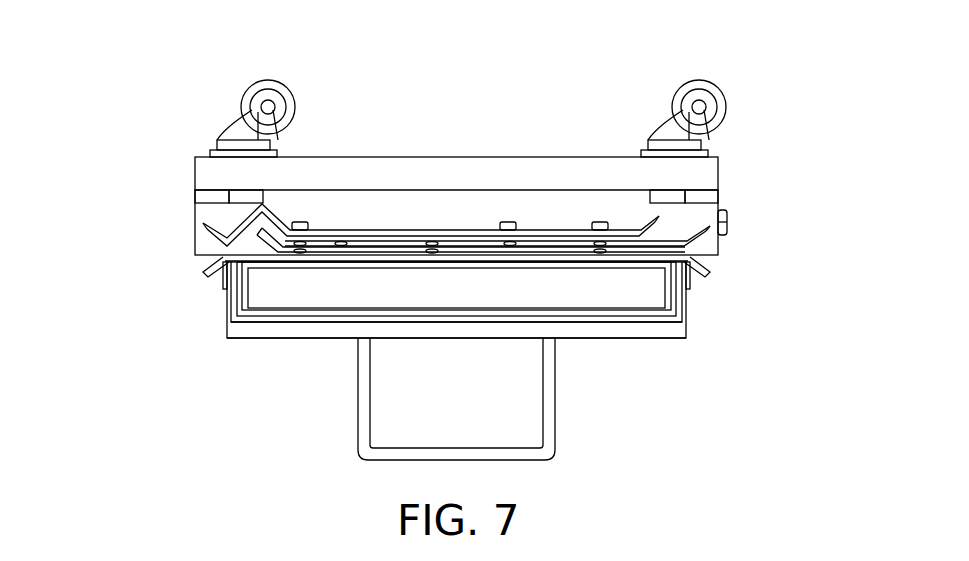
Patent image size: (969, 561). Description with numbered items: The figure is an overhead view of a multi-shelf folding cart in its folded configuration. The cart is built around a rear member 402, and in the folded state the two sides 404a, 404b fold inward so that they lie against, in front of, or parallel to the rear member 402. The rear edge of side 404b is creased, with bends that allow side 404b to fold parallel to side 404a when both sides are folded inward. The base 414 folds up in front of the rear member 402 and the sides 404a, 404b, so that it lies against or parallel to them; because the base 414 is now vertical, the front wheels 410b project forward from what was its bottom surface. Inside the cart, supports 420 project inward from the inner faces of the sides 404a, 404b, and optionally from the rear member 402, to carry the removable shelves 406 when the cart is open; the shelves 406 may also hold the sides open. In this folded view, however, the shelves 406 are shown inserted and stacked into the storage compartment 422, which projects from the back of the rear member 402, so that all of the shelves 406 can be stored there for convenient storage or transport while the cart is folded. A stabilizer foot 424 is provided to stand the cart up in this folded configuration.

The rear member 402 is at (710, 273).
The side 404a is at (727, 222).
The side 404b is at (204, 227).
The removable shelves 406 is at (690, 297).
The front wheels 410b is at (245, 108).
The base 414 is at (497, 170).
The supports 420 is at (433, 238).
The storage compartment 422 is at (623, 328).
The stabilizer foot 424 is at (368, 407).